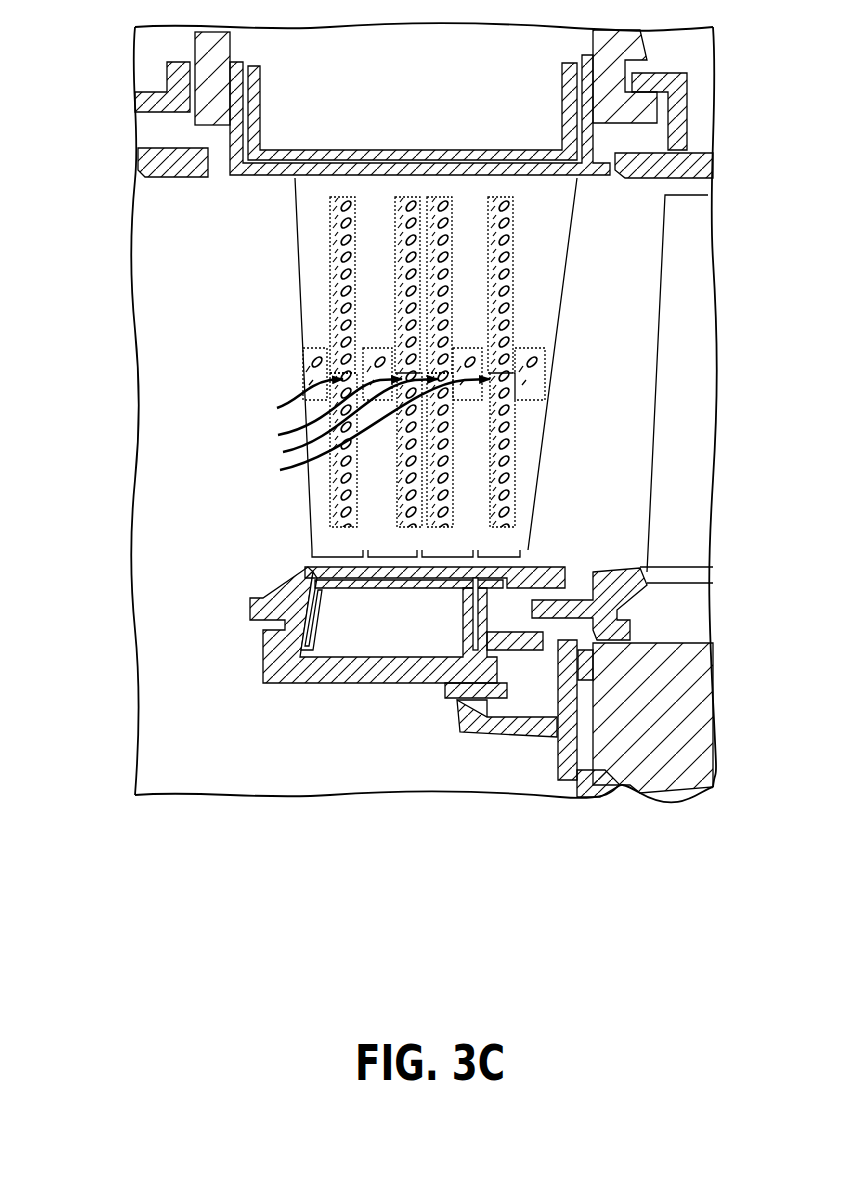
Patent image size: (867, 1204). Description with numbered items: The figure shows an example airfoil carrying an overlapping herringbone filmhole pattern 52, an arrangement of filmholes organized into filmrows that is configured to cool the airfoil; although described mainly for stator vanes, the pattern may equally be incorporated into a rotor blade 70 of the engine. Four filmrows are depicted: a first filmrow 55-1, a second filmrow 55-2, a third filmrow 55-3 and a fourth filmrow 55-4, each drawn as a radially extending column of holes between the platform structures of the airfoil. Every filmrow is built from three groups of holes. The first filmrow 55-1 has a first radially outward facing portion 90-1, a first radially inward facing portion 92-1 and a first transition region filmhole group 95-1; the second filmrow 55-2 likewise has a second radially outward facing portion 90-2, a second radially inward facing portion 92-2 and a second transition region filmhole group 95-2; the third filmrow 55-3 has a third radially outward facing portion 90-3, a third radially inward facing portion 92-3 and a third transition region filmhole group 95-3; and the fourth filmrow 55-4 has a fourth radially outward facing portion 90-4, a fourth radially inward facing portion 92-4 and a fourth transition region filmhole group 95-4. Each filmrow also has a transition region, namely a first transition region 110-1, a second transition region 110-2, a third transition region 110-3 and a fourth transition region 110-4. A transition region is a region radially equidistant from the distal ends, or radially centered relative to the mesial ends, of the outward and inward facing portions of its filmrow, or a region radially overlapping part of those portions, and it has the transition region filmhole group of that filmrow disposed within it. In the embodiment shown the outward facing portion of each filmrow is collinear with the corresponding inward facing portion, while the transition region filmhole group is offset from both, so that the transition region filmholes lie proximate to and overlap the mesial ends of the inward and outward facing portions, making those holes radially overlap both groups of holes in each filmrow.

The overlapping herringbone filmhole pattern 52 is at (172, 428).
The rotor blade 70 is at (670, 263).
The first filmrow 55-1 is at (340, 553).
The second filmrow 55-2 is at (388, 553).
The third filmrow 55-3 is at (443, 553).
The fourth filmrow 55-4 is at (497, 555).
The first radially outward facing portion 90-1 is at (332, 503).
The second radially outward facing portion 90-2 is at (405, 532).
The third radially outward facing portion 90-3 is at (453, 530).
The fourth radially outward facing portion 90-4 is at (513, 458).
The first radially inward facing portion 92-1 is at (342, 197).
The second radially inward facing portion 92-2 is at (404, 197).
The third radially inward facing portion 92-3 is at (436, 197).
The fourth radially inward facing portion 92-4 is at (492, 197).
The first transition region filmhole group 95-1 is at (310, 348).
The second transition region filmhole group 95-2 is at (372, 348).
The third transition region filmhole group 95-3 is at (462, 348).
The fourth transition region filmhole group 95-4 is at (530, 348).
The first transition region 110-1 is at (280, 403).
The second transition region 110-2 is at (310, 412).
The third transition region 110-3 is at (328, 421).
The fourth transition region 110-4 is at (354, 430).